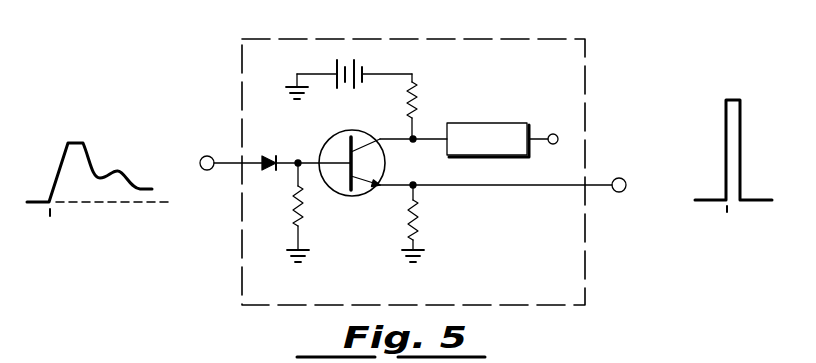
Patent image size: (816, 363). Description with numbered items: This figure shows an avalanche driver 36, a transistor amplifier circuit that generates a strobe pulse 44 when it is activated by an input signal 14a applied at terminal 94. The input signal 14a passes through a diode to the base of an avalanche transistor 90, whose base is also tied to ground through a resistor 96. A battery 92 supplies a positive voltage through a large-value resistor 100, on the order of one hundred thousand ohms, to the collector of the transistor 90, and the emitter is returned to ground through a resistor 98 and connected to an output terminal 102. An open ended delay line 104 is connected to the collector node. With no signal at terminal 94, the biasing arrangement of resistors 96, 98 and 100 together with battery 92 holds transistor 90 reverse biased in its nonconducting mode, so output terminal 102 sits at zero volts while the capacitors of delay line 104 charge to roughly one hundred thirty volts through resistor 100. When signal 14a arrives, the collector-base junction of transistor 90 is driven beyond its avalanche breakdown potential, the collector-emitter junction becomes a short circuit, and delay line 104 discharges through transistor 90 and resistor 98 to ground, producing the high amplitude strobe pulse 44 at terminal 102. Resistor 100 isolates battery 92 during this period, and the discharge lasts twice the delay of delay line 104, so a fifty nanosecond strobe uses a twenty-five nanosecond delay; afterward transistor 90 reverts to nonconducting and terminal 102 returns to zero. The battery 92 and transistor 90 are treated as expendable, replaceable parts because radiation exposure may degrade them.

The signal 14a is at (96, 170).
The terminal 94 is at (205, 156).
The avalanche driver 36 is at (459, 39).
The avalanche transistor 90 is at (330, 141).
The battery 92 is at (367, 74).
The resistor 100 is at (417, 97).
The delay line 104 is at (510, 122).
The resistor 96 is at (305, 220).
The resistor 98 is at (420, 220).
The output terminal 102 is at (623, 178).
The strobe pulse 44 is at (742, 122).